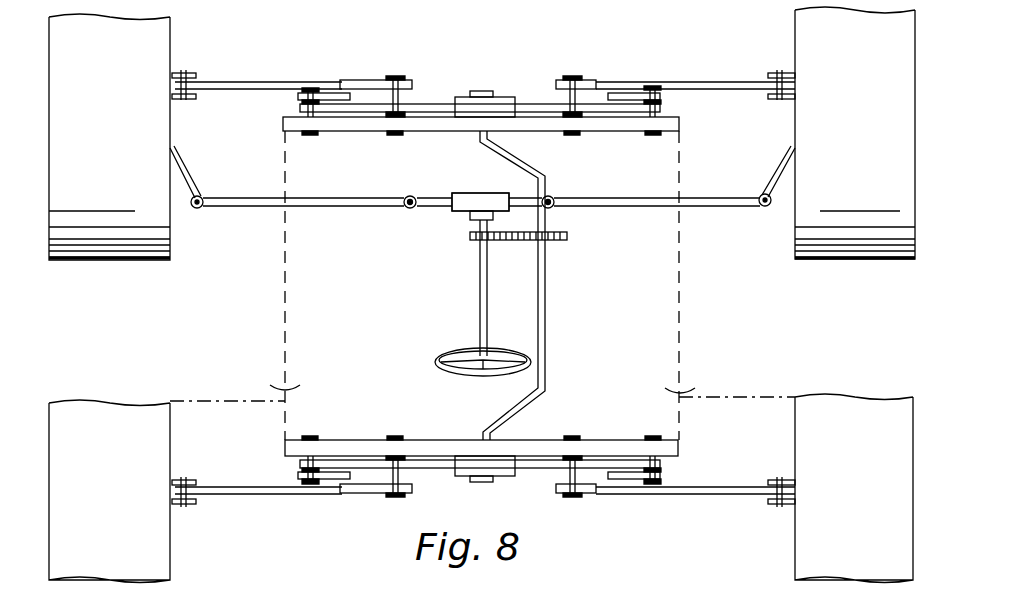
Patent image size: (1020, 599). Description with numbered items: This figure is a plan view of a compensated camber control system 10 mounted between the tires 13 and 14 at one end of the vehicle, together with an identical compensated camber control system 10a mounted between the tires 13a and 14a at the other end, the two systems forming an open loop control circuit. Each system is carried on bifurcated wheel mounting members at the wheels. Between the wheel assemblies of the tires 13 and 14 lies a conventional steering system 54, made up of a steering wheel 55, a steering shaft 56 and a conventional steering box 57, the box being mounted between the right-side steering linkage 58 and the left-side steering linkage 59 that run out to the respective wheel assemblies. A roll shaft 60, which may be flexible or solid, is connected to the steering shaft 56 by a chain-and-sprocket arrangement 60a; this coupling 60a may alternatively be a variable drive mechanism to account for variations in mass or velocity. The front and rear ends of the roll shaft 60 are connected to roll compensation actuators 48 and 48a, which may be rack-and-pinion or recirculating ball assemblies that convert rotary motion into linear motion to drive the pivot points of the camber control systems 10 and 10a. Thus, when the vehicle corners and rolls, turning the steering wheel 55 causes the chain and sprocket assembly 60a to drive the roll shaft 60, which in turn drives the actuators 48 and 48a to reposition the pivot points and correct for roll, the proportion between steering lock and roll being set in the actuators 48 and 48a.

The compensated camber control system 10 is at (328, 42).
The compensated camber control system 10a is at (420, 425).
The tire 13 is at (874, 54).
The tire 13a is at (886, 440).
The tire 14 is at (129, 59).
The tire 14a is at (140, 446).
The roll compensation actuator 48 is at (512, 96).
The roll compensation actuator 48a is at (450, 478).
The steering system 54 is at (441, 252).
The steering wheel 55 is at (447, 354).
The steering shaft 56 is at (487, 324).
The steering box 57 is at (478, 192).
The right-side steering linkage 58 is at (667, 188).
The left-side steering linkage 59 is at (300, 196).
The roll shaft 60 is at (545, 338).
The chain-and-sprocket arrangement 60a is at (568, 238).